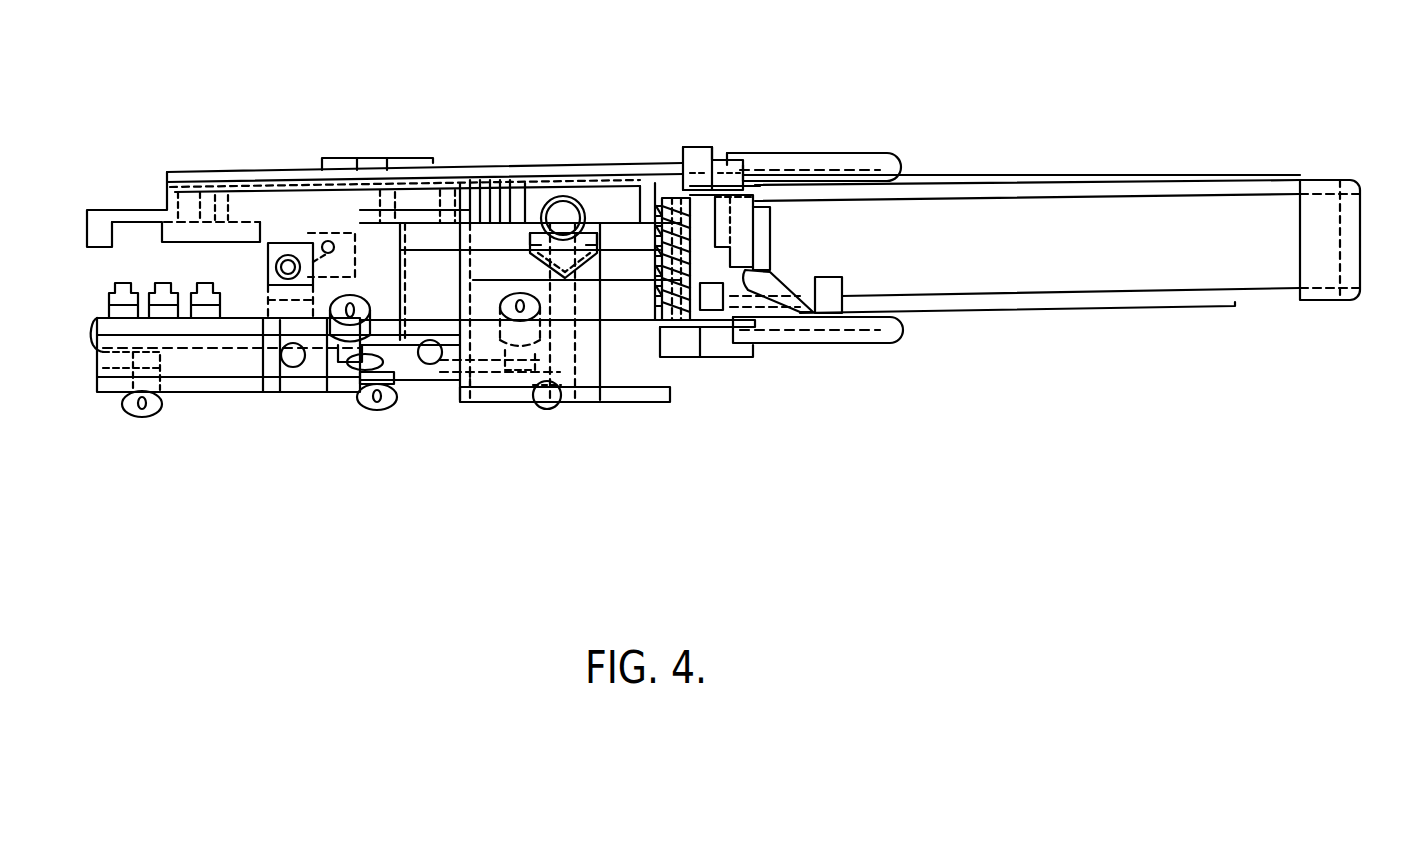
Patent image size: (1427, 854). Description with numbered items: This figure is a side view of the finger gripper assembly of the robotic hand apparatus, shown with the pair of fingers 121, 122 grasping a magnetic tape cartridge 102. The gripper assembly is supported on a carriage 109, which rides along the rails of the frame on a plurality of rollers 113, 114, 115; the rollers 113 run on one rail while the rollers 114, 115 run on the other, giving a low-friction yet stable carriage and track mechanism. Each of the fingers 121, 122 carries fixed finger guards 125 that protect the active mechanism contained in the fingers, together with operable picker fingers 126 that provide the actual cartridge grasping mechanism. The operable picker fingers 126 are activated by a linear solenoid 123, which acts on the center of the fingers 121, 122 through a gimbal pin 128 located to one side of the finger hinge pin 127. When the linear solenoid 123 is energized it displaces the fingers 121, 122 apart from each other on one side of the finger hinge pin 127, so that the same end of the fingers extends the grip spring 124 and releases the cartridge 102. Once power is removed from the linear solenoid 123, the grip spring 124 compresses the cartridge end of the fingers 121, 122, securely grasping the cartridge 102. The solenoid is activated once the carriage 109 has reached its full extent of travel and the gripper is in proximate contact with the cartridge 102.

The magnetic tape cartridge 102 is at (1022, 270).
The carriage 109 is at (229, 402).
The rollers 113 is at (372, 411).
The rollers 114 is at (141, 415).
The rollers 115 is at (575, 398).
The finger 121 is at (797, 152).
The finger 122 is at (825, 335).
The linear solenoid 123 is at (515, 404).
The grip spring 124 is at (681, 320).
The fixed finger guards 125 is at (891, 152).
The operable picker fingers 126 is at (900, 164).
The finger hinge pin 127 is at (283, 256).
The gimbal pin 128 is at (566, 212).